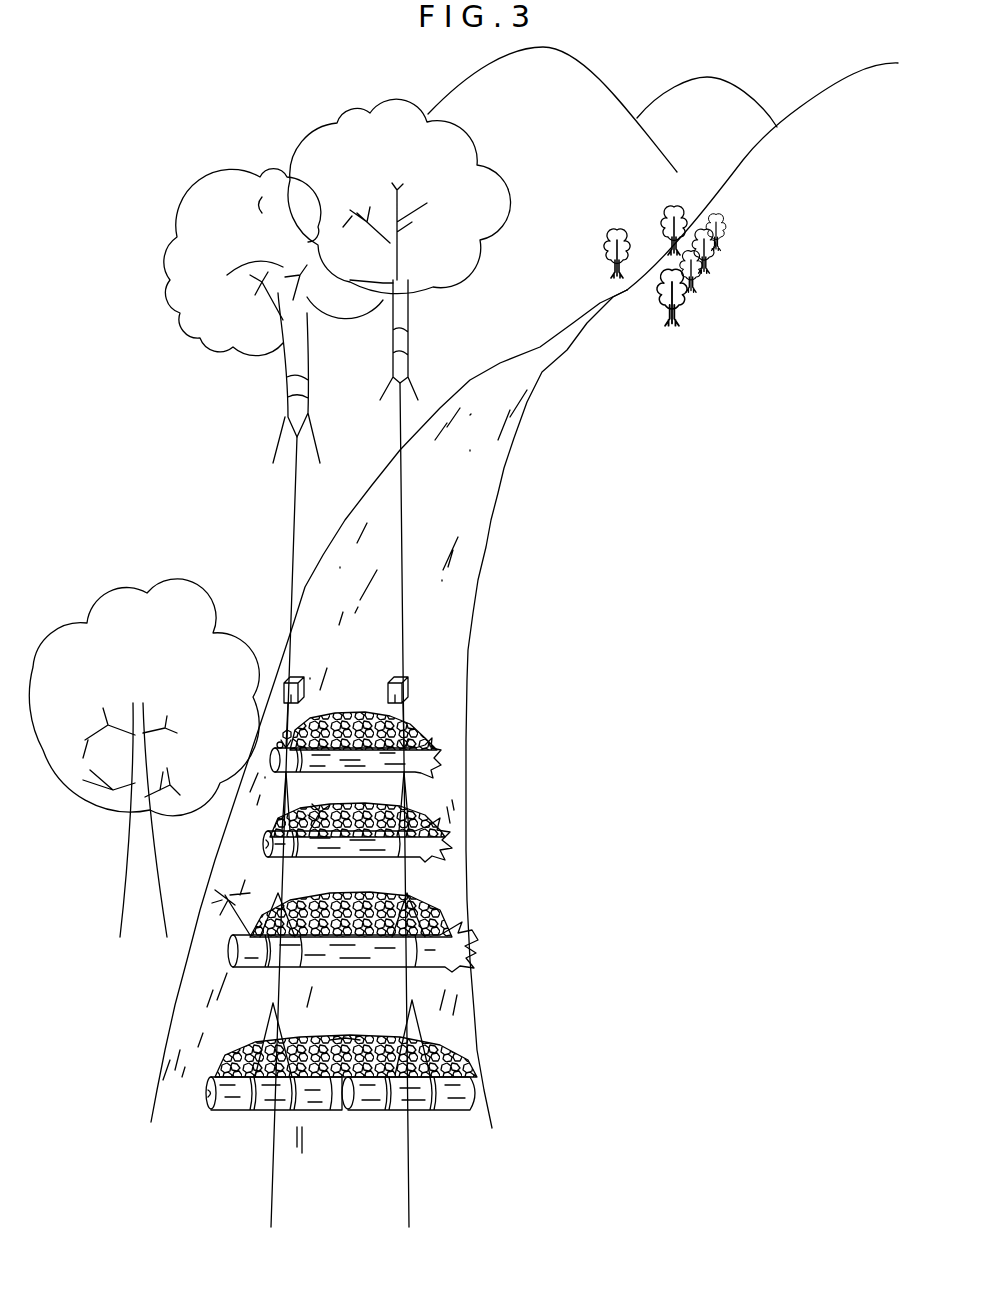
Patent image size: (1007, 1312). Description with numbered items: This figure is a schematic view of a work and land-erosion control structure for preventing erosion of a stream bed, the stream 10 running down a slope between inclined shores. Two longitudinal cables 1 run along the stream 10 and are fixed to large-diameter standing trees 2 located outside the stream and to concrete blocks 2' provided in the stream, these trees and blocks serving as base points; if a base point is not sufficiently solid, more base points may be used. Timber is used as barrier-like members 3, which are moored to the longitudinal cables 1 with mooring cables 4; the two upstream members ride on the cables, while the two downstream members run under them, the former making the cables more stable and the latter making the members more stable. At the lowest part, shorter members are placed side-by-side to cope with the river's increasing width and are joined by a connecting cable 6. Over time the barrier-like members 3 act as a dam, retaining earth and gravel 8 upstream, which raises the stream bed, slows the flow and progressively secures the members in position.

The longitudinal cable 1 is at (292, 532).
The standing tree 2 is at (337, 281).
The concrete block 2' is at (366, 647).
The barrier-like member 3 is at (442, 763).
The mooring cable 4 is at (290, 743).
The connecting cable 6 is at (340, 1047).
The earth and gravel 8 is at (380, 810).
The slope channel 10 is at (511, 493).